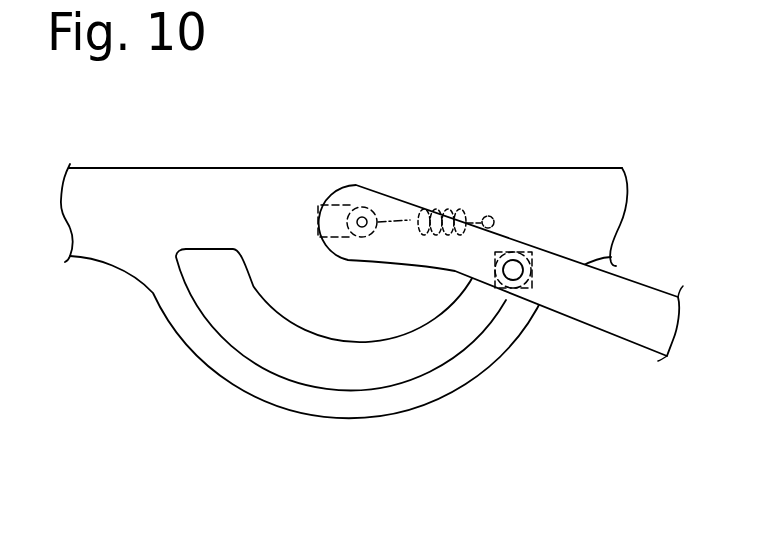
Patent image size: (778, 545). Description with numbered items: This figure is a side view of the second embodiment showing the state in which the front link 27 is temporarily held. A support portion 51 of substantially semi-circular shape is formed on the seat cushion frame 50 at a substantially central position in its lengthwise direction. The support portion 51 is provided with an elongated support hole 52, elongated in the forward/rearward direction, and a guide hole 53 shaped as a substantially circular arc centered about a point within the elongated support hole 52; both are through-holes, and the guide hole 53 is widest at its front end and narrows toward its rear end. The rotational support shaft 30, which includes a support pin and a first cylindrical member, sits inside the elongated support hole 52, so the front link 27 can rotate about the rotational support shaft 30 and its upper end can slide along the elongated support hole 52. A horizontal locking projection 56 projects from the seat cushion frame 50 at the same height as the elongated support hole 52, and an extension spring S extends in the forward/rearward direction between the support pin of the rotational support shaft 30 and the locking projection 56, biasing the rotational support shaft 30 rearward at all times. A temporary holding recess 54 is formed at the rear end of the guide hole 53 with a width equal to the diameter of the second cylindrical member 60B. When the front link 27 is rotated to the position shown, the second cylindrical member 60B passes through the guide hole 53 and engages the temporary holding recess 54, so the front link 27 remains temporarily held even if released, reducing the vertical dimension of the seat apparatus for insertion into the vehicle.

The seat cushion frame 50 is at (575, 183).
The support portion 51 is at (217, 372).
The elongated support hole 52 is at (320, 207).
The guide hole 53 is at (296, 380).
The temporary holding recess 54 is at (534, 266).
The locking projection 56 is at (488, 216).
The front link 27 is at (635, 323).
The rotational support shaft 30 is at (367, 206).
The extension spring S is at (446, 212).
The second cylindrical member 60B is at (494, 290).